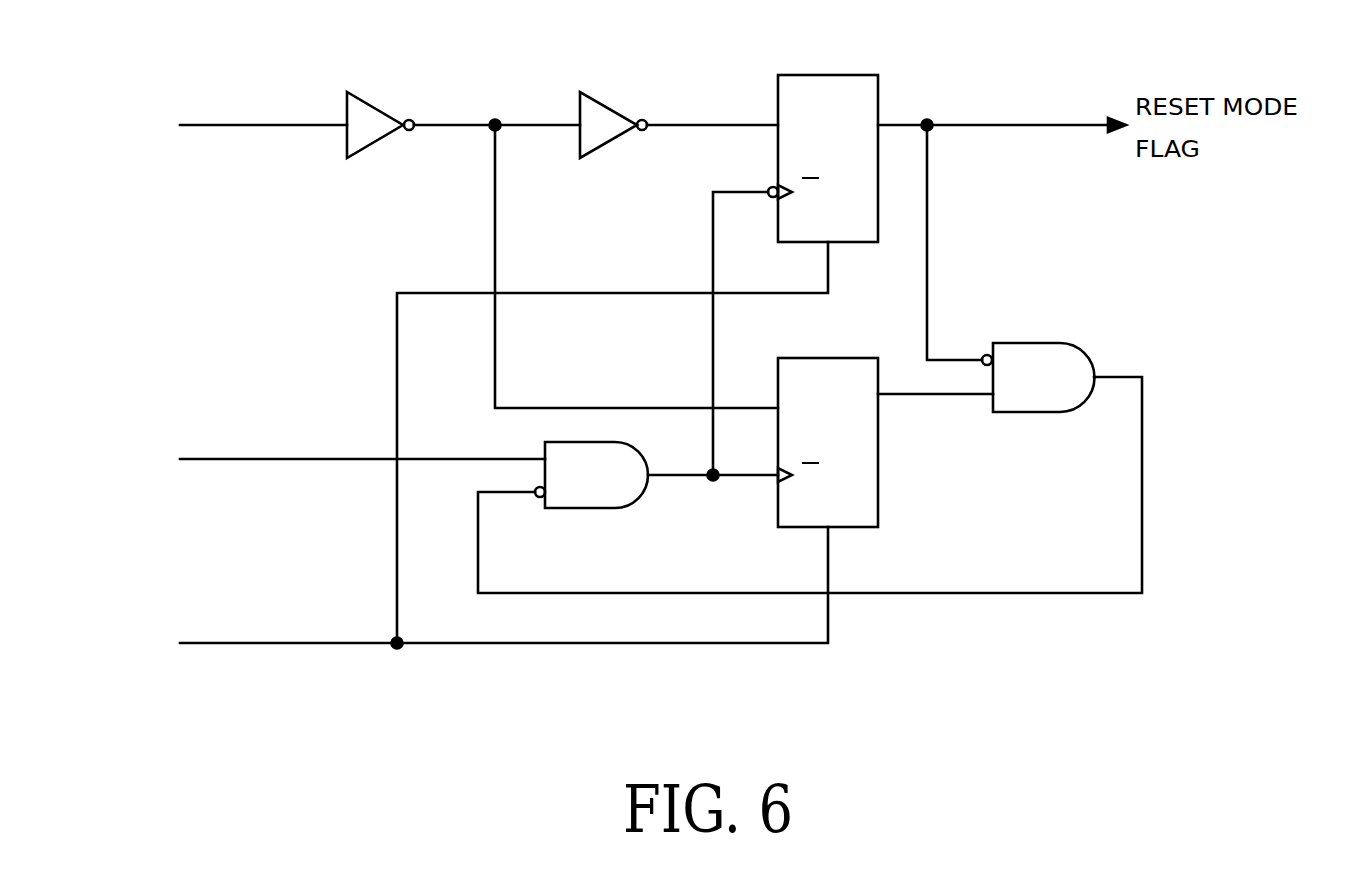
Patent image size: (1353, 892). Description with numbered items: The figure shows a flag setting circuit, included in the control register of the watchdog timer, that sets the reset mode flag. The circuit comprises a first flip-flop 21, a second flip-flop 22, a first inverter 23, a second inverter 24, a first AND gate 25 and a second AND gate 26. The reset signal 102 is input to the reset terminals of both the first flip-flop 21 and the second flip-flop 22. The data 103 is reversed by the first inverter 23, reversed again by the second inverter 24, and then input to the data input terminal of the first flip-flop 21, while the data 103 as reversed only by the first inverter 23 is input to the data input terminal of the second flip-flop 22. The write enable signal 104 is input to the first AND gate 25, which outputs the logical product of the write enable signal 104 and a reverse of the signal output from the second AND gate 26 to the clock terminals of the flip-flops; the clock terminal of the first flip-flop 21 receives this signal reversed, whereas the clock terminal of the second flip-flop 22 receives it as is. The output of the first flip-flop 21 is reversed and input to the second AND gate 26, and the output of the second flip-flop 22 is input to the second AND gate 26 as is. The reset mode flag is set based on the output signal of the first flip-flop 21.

The first flip-flop 21 is at (845, 75).
The second flip-flop 22 is at (845, 358).
The first inverter 23 is at (386, 101).
The second inverter 24 is at (617, 101).
The first AND gate 25 is at (596, 508).
The second AND gate 26 is at (1042, 343).
The reset signal 102 is at (245, 644).
The data 103 is at (245, 126).
The write enable signal 104 is at (245, 460).